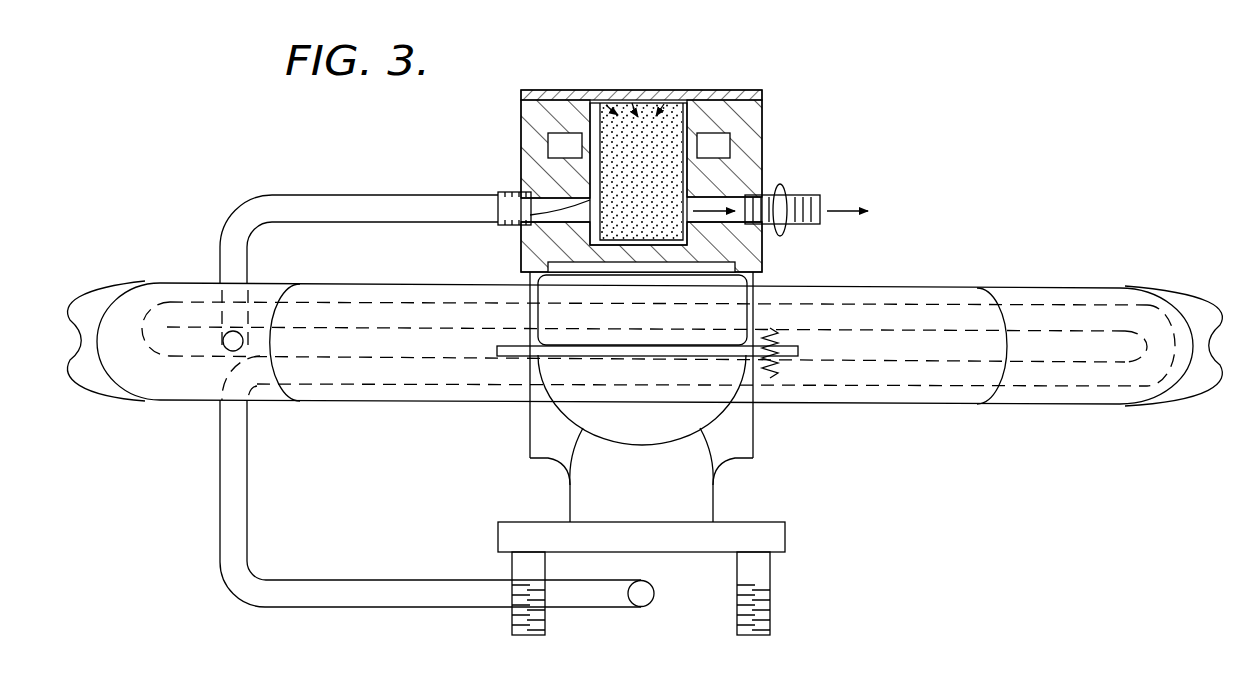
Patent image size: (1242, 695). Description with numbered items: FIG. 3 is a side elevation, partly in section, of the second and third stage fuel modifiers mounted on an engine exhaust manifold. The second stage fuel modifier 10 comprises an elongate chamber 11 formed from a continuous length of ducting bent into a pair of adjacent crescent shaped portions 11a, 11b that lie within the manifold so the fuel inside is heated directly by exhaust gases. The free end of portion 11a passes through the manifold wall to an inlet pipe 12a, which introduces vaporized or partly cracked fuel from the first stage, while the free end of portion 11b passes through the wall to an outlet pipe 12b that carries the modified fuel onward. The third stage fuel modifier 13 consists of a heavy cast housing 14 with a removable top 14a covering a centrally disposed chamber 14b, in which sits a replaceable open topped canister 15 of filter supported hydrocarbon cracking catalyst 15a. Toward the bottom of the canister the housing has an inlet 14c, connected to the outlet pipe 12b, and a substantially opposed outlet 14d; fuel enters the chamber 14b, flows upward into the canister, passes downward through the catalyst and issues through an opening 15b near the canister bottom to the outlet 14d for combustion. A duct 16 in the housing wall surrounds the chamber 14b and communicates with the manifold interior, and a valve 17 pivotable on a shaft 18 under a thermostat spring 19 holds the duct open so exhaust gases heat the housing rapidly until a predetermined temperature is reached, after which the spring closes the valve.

The second stage fuel modifier 10 is at (903, 292).
The elongate chamber 11 is at (1015, 322).
The crescent shaped portion 11a is at (427, 378).
The crescent shaped portion 11b is at (437, 313).
The inlet pipe 12a is at (410, 567).
The outlet pipe 12b is at (403, 223).
The third stage fuel modifier 13 is at (773, 147).
The housing 14 is at (528, 111).
The removable top 14a is at (724, 71).
The chamber 14b is at (593, 113).
The inlet 14c is at (540, 207).
The outlet 14d is at (725, 222).
The canister 15 is at (556, 112).
The hydrocarbon cracking catalyst 15a is at (665, 115).
The opening 15b is at (693, 212).
The duct 16 is at (723, 143).
The valve 17 is at (665, 423).
The shaft 18 is at (507, 355).
The thermostat spring 19 is at (775, 378).